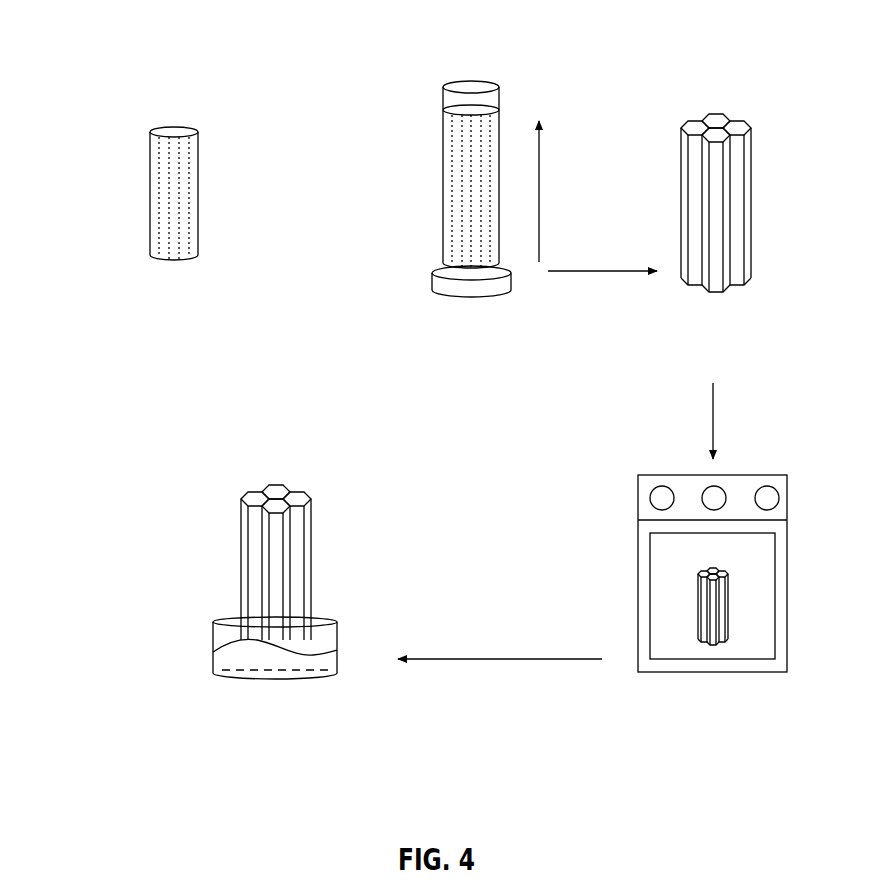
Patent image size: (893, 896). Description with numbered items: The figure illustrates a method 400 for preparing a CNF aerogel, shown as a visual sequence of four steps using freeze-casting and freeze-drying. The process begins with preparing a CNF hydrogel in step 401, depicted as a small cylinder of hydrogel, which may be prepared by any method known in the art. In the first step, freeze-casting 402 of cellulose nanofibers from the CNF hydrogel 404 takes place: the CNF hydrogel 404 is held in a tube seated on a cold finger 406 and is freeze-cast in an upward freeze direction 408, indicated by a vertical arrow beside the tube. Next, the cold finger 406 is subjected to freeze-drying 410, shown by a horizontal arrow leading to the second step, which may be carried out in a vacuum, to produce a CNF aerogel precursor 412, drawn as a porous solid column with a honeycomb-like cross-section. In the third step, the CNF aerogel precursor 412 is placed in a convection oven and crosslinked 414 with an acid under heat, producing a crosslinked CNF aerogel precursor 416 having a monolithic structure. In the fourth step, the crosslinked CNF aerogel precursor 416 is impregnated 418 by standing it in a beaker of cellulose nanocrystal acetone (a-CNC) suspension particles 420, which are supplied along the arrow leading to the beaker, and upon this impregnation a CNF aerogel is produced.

The method for preparing a CNF aerogel 400 is at (111, 79).
The step of preparing a CNF hydrogel 401 is at (173, 266).
The freeze-casting 402 is at (432, 380).
The CNF hydrogel 404 is at (393, 123).
The cold finger 406 is at (417, 277).
The freeze direction 408 is at (543, 138).
The freeze-drying 410 is at (595, 267).
The CNF aerogel precursor 412 is at (680, 378).
The crosslinking 414 is at (668, 787).
The crosslinked CNF aerogel precursor 416 is at (239, 535).
The impregnating 418 is at (262, 795).
The a-CNC suspension particles 420 is at (448, 657).